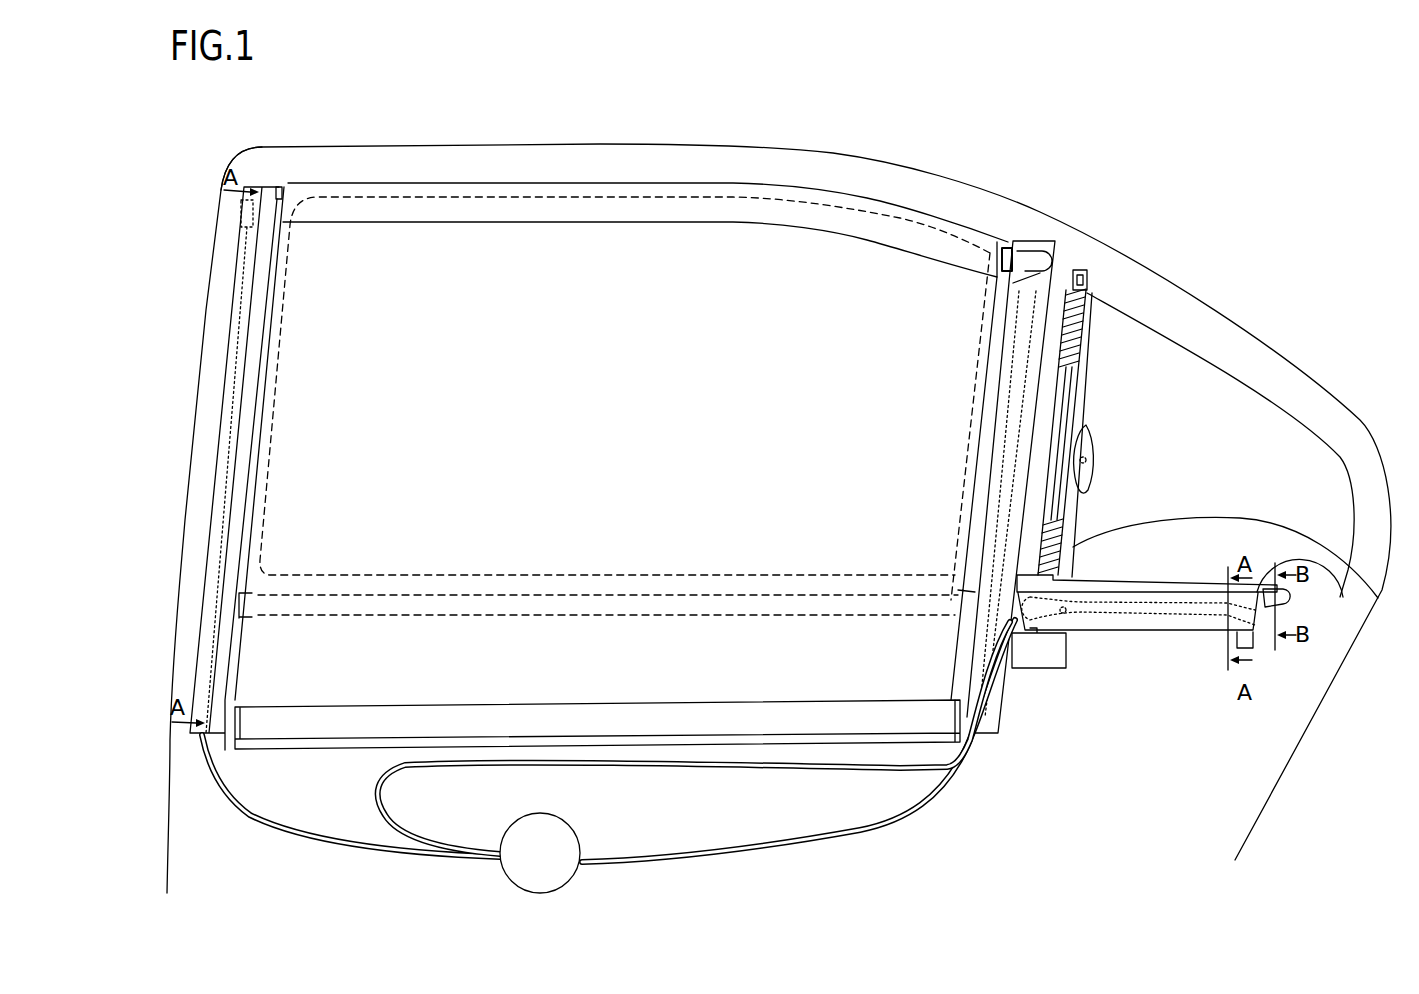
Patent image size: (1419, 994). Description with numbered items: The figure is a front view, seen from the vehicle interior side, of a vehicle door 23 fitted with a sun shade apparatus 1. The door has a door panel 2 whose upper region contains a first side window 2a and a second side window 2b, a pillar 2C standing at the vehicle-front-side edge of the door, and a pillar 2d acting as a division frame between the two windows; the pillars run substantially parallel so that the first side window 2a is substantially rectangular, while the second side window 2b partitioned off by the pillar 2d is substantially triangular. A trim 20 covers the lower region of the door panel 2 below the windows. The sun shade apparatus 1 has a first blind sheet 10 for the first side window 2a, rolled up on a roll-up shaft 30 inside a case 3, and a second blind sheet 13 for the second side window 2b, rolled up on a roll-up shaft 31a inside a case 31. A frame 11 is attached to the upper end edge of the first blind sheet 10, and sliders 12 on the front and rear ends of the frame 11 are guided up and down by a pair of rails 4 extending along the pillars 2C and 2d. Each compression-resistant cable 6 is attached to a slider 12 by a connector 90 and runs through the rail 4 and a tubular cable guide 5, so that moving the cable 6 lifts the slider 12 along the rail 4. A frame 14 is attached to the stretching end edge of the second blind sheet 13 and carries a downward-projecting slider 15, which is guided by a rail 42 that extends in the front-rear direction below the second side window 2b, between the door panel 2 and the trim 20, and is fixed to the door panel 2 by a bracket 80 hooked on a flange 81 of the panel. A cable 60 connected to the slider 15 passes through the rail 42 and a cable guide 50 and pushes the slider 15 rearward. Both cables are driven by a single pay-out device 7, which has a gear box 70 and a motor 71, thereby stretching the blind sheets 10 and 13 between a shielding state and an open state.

The sun shade apparatus 1 is at (383, 855).
The door panel 2 is at (170, 740).
The first side window 2a is at (603, 193).
The second side window 2b is at (1247, 420).
The pillar 2C is at (210, 352).
The pillar (division frame) 2d is at (1090, 323).
The case 3 is at (568, 765).
The roll-up shaft 30 is at (262, 728).
The rail (guide rail) 4 is at (224, 522).
The cable guide (outer tube) 5 is at (626, 759).
The cable 6 is at (253, 815).
The pay-out device 7 is at (496, 863).
The gear box 70 is at (540, 853).
The motor 71 is at (500, 863).
The first blind sheet (curtain) 10 is at (538, 260).
The frame 11 is at (431, 183).
The slider (sliding member) 12 is at (282, 190).
The second blind sheet (curtain) 13 is at (1063, 383).
The frame 14 is at (1233, 581).
The slider 15 is at (1072, 634).
The trim 20 is at (320, 876).
The vehicle door 23 is at (206, 174).
The case 31 is at (1141, 401).
The roll-up shaft 31a is at (1085, 291).
The rail (guide rail) 42 is at (1133, 605).
The cable guide 50 is at (694, 760).
The cable 60 is at (723, 765).
The bracket 80 is at (1197, 633).
The flange 81 is at (1307, 593).
The connector 90 is at (243, 213).